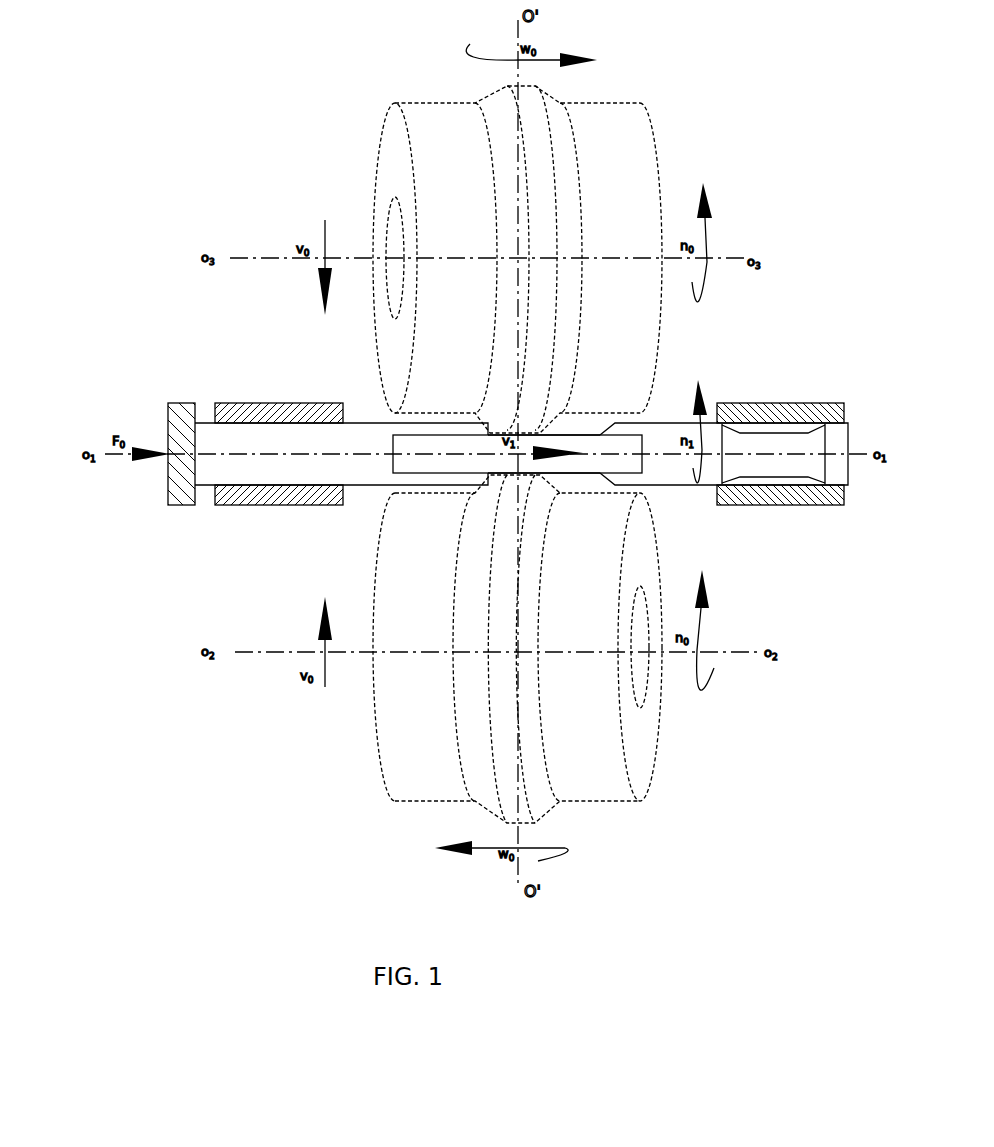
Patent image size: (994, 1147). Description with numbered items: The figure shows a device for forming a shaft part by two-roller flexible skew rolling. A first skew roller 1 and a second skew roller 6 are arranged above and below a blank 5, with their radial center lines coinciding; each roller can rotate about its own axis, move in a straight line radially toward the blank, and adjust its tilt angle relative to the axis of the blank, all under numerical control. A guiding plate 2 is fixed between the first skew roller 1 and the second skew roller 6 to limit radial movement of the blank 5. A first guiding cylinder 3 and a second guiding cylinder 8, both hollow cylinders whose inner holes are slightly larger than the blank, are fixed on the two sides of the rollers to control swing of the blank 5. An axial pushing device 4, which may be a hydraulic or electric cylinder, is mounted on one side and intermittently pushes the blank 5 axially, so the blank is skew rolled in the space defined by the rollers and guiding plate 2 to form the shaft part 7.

The first skew roller 1 is at (397, 720).
The guiding plate 2 is at (498, 458).
The first guiding cylinder 3 is at (240, 503).
The axial pushing device 4 is at (167, 430).
The blank 5 is at (373, 440).
The second skew roller 6 is at (397, 187).
The shaft part 7 is at (732, 447).
The second guiding cylinder 8 is at (787, 405).